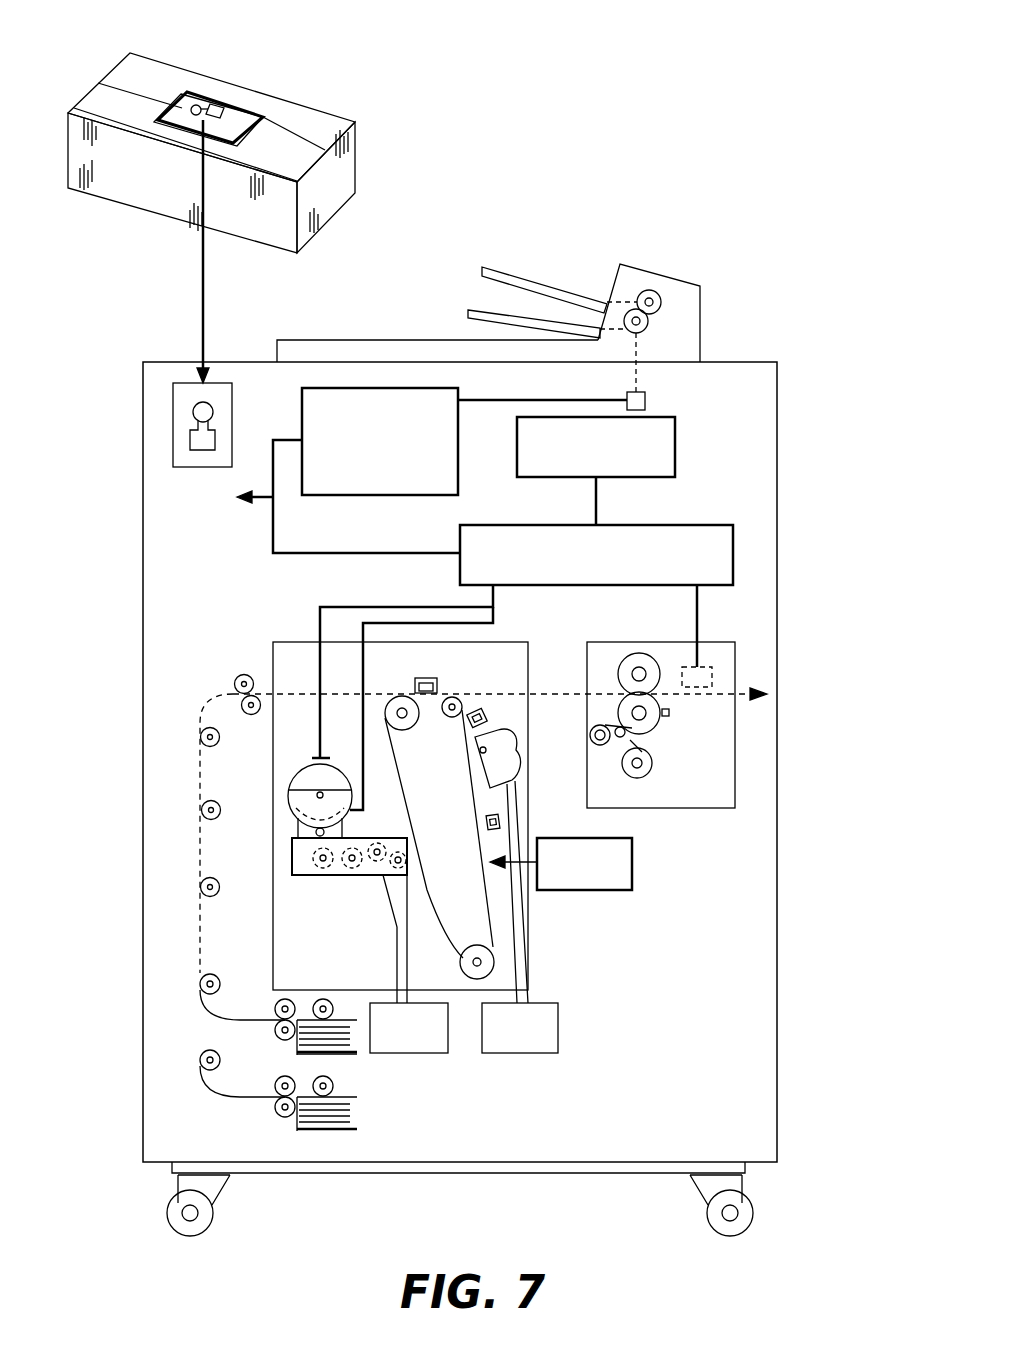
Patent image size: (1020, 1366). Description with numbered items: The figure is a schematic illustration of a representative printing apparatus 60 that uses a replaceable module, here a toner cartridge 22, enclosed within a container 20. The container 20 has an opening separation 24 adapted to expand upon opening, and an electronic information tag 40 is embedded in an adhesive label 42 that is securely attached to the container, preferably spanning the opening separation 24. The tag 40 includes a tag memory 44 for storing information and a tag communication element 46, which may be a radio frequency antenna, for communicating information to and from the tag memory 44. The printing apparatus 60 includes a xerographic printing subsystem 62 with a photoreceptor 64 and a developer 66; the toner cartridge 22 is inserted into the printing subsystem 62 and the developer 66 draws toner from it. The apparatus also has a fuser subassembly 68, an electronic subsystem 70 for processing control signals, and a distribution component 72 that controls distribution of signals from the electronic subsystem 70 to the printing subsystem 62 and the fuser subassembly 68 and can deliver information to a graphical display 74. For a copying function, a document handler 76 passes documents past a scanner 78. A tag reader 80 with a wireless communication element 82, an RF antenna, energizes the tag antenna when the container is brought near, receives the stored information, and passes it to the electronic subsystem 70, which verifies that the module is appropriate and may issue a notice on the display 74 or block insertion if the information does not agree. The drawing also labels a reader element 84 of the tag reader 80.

The container 20 is at (213, 133).
The toner cartridge 22 is at (340, 773).
The opening separation 24 is at (110, 88).
The electronic information tag 40 is at (208, 100).
The adhesive label 42 is at (265, 117).
The tag memory 44 is at (219, 112).
The tag communication element 46 is at (193, 108).
The printing apparatus 60 is at (636, 156).
The printing subsystem 62 is at (513, 642).
The photoreceptor 64 is at (490, 908).
The developer 66 is at (352, 812).
The fuser subassembly 68 is at (677, 808).
The electronic subsystem 70 is at (300, 420).
The distribution component 72 is at (660, 525).
The graphical display 74 is at (675, 440).
The document handler 76 is at (700, 312).
The scanner 78 is at (645, 394).
The tag reader 80 is at (156, 409).
The wireless communication element 82 is at (193, 408).
The reader module 84 is at (190, 438).